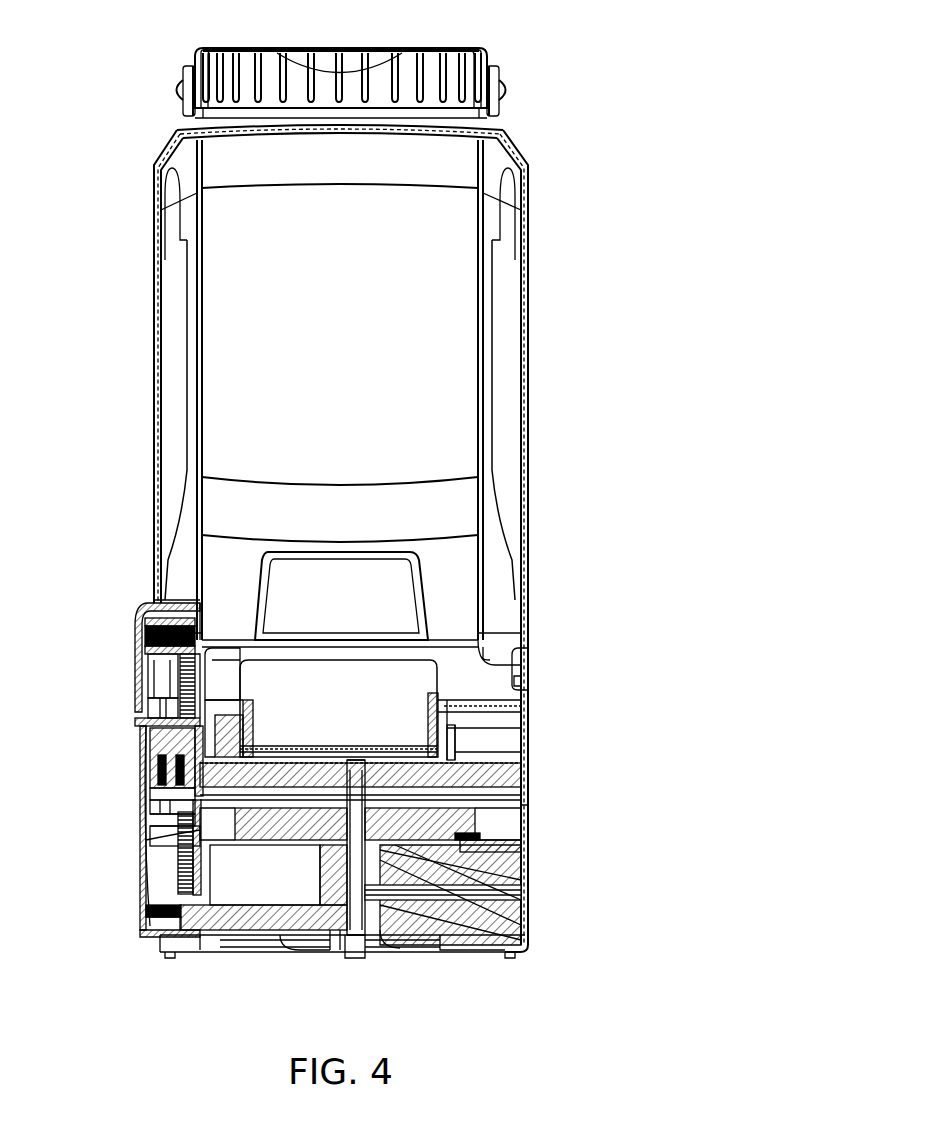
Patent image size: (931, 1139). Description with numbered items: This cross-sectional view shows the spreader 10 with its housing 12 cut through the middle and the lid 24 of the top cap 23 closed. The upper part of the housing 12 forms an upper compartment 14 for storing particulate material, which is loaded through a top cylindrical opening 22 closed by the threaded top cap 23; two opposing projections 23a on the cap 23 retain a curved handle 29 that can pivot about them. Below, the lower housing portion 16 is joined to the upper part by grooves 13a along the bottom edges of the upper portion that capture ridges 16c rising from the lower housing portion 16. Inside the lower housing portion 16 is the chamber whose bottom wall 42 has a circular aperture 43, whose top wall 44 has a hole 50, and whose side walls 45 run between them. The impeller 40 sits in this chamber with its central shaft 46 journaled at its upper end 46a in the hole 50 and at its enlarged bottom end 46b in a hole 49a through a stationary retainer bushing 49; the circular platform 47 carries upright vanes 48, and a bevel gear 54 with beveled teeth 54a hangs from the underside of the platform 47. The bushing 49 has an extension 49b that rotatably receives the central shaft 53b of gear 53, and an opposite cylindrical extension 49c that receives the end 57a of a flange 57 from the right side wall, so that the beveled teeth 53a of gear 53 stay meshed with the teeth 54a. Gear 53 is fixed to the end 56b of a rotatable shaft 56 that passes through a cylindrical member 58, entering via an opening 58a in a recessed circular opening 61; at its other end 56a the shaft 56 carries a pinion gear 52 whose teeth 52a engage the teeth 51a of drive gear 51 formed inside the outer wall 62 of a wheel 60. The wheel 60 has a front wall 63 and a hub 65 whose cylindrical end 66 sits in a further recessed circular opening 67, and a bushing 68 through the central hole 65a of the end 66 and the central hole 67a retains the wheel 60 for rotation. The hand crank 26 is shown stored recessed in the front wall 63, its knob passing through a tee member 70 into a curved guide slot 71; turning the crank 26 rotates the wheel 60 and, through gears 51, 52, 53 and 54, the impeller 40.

The spreader 10 is at (528, 312).
The housing 12 is at (528, 240).
The grooves 13a is at (528, 662).
The upper compartment 14 is at (470, 382).
The lower housing portion 16 is at (526, 838).
The ridges 16c is at (522, 684).
The top cylindrical opening 22 is at (485, 116).
The top cap 23 is at (486, 53).
The projections 23a is at (172, 90).
The lid 24 is at (381, 54).
The hand crank 26 is at (170, 744).
The handle 29 is at (503, 80).
The impeller 40 is at (482, 824).
The bottom wall 42 is at (212, 848).
The circular aperture 43 is at (490, 876).
The top wall 44 is at (500, 786).
The side walls 45 is at (523, 813).
The central shaft 46 is at (355, 760).
The upper end of shaft 46a is at (395, 762).
The bottom end of shaft 46b is at (390, 844).
The circular platform 47 is at (198, 846).
The vanes 48 is at (500, 850).
The retainer bushing 49 is at (470, 910).
The hole 49a is at (388, 936).
The extension 49b is at (325, 800).
The cylindrical extension 49c is at (480, 926).
The hole 50 is at (500, 801).
The drive gear 51 is at (165, 633).
The teeth 51a is at (190, 856).
The pinion gear 52 is at (196, 928).
The teeth 52a is at (188, 906).
The gear 53 is at (318, 866).
The beveled teeth 53a is at (336, 946).
The central shaft 53b is at (326, 936).
The gear 54 is at (345, 795).
The beveled teeth 54a is at (470, 893).
The rotatable shaft 56 is at (230, 932).
The end of shaft 56a is at (210, 930).
The other end of shaft 56b is at (292, 928).
The flange 57 is at (456, 936).
The end of flange 57a is at (378, 926).
The cylindrical member 58 is at (226, 942).
The opening 58a is at (192, 882).
The wheel 60 is at (160, 724).
The recessed circular opening 61 is at (178, 604).
The outer wall 62 is at (152, 606).
The front wall 63 is at (162, 684).
The hub 65 is at (168, 793).
The central hole 65a is at (235, 820).
The cylindrical end 66 is at (168, 766).
The recessed circular opening 67 is at (240, 705).
The central hole 67a is at (235, 755).
The bushing 68 is at (222, 735).
The tee member 70 is at (170, 808).
The curved guide slot 71 is at (170, 826).